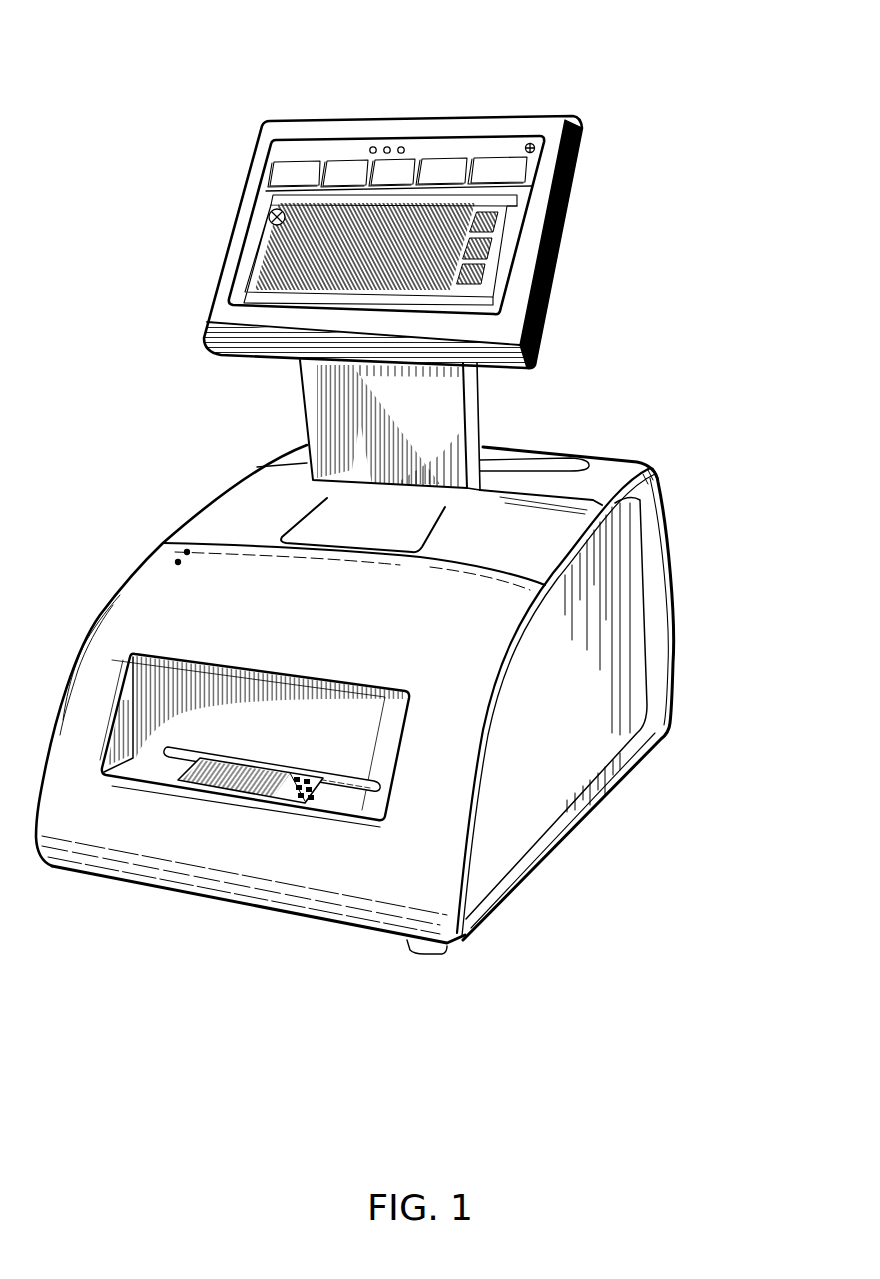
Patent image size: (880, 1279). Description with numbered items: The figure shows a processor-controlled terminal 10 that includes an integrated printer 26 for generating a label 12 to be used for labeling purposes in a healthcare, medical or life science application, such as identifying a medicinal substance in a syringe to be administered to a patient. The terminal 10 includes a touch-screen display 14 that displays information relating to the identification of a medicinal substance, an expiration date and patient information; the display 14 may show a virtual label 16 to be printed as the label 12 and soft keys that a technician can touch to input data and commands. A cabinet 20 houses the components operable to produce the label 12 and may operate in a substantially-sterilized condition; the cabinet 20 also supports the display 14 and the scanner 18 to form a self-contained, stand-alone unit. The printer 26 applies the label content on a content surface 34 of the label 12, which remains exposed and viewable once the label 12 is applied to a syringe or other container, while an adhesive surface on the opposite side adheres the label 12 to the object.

The terminal 10 is at (670, 68).
The label 12 is at (217, 787).
The touch-screen display 14 is at (297, 123).
The virtual label 16 is at (293, 243).
The scanner 18 is at (327, 362).
The cabinet 20 is at (525, 713).
The printer 26 is at (343, 783).
The content surface 34 is at (275, 773).